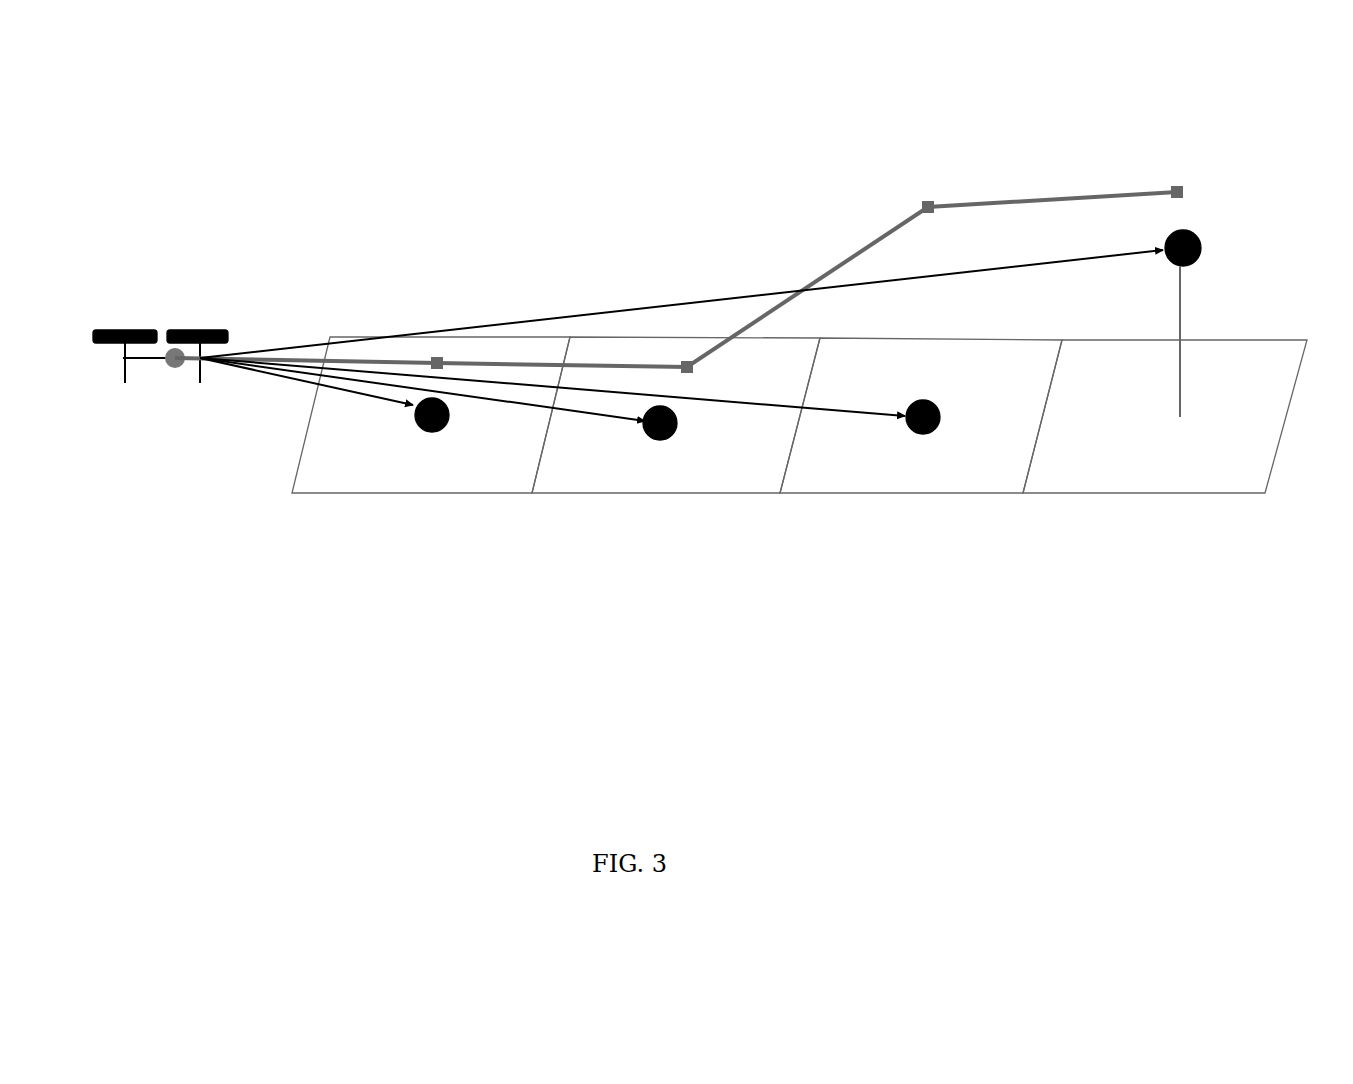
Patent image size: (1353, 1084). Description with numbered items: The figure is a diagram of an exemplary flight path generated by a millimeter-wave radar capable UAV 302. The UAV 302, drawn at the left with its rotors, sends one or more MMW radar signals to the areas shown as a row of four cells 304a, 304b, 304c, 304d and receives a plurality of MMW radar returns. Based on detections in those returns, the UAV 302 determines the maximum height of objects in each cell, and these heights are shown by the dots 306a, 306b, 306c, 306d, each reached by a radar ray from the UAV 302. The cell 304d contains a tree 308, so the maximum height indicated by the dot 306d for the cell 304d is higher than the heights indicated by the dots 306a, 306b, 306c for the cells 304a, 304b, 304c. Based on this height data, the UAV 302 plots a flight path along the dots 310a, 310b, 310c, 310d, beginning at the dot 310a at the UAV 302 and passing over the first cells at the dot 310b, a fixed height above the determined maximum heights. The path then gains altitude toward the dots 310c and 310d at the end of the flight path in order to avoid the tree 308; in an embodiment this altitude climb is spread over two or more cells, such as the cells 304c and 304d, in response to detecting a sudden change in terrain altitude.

The MMW radar capable UAV 302 is at (177, 327).
The cell 304a is at (330, 493).
The cell 304b is at (630, 493).
The cell 304c is at (866, 493).
The cell 304d is at (1079, 493).
The dot 306a is at (428, 430).
The dot 306b is at (655, 437).
The dot 306c is at (918, 430).
The dot 306d is at (1190, 240).
The tree 308 is at (1252, 287).
The dot 310a is at (175, 383).
The dot 310b is at (437, 363).
The dot 310c is at (928, 207).
The dot 310d is at (1182, 192).